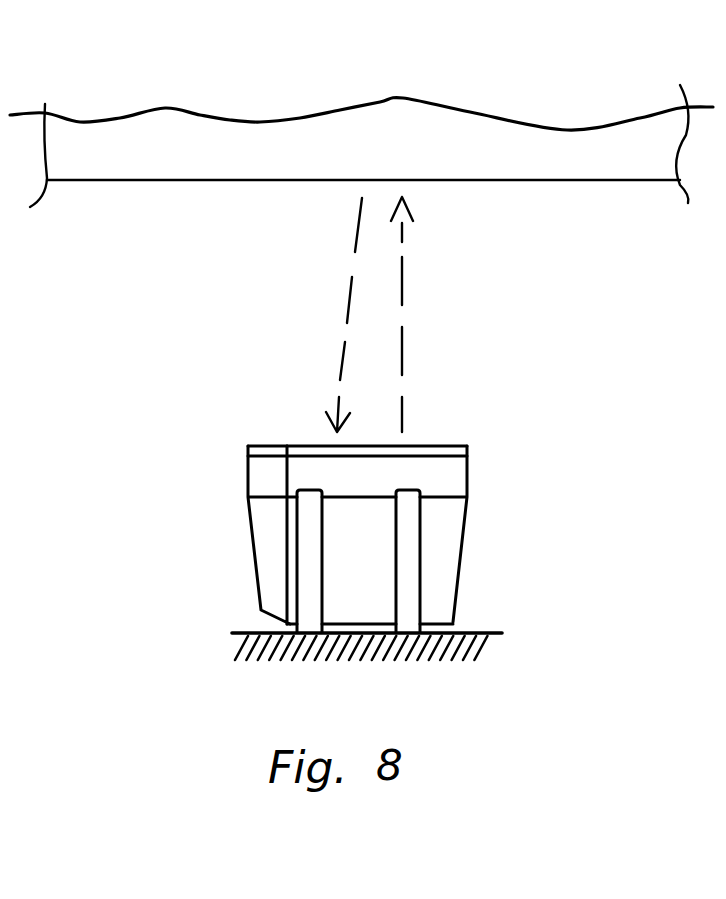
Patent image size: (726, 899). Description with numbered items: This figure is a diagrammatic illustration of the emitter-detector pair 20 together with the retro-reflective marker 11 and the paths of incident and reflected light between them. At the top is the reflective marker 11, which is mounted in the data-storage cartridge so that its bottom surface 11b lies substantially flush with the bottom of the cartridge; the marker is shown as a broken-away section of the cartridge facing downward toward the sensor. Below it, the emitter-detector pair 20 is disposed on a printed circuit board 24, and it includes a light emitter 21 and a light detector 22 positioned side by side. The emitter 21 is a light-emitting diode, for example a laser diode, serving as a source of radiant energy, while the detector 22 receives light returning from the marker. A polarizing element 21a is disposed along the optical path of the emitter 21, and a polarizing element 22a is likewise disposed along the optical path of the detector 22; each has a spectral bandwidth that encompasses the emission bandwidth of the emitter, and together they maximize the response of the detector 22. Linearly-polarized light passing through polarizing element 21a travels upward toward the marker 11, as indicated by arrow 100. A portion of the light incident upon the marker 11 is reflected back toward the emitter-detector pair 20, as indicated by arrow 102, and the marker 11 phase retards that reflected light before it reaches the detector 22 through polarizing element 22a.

The retro-reflective marker 11 is at (528, 96).
The bottom surface of reflective marker 11b is at (88, 180).
The arrow representing emitted light 100 is at (405, 276).
The arrow representing reflected light 102 is at (347, 288).
The emitter-detector pair 20 is at (387, 517).
The light emitter 21 is at (410, 520).
The polarizing element 21a is at (435, 446).
The light detector 22 is at (210, 513).
The polarizing element 22a is at (265, 445).
The printed circuit board 24 is at (468, 673).